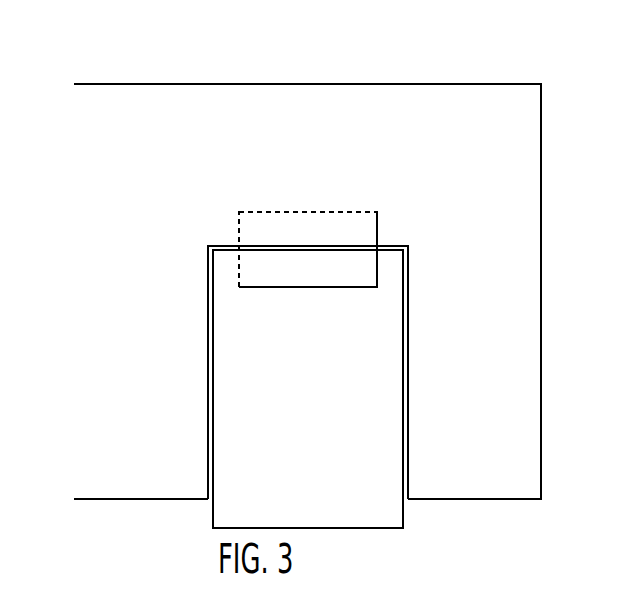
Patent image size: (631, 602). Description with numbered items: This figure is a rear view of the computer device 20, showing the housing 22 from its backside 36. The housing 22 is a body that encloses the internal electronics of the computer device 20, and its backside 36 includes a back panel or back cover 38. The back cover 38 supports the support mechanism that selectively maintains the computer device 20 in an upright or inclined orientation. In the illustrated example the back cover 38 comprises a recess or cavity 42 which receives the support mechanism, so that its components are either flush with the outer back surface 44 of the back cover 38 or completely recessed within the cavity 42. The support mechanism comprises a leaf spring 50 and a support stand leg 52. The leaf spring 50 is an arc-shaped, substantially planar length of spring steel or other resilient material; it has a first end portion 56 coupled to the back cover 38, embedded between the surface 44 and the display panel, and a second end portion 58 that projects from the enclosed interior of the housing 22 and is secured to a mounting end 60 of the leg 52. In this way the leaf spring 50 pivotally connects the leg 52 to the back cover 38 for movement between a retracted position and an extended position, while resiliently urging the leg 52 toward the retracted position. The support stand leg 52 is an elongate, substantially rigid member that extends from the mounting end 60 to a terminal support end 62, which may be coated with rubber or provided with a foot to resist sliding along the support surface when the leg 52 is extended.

The computer device 20 is at (64, 80).
The housing 22 is at (541, 107).
The backside 36 is at (561, 171).
The back cover 38 is at (138, 143).
The cavity 42 is at (408, 451).
The outer back surface 44 is at (520, 350).
The leaf spring 50 is at (378, 236).
The support stand leg 52 is at (311, 401).
The first end portion 56 is at (364, 212).
The second end portion 58 is at (366, 288).
The mounting end 60 is at (233, 256).
The terminal support end 62 is at (304, 530).